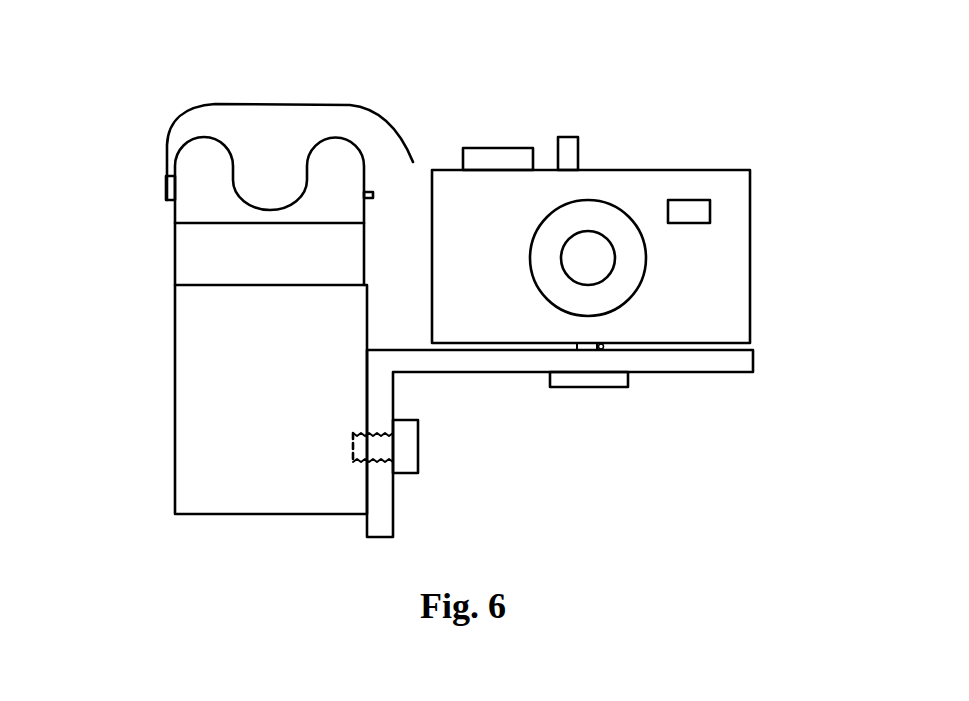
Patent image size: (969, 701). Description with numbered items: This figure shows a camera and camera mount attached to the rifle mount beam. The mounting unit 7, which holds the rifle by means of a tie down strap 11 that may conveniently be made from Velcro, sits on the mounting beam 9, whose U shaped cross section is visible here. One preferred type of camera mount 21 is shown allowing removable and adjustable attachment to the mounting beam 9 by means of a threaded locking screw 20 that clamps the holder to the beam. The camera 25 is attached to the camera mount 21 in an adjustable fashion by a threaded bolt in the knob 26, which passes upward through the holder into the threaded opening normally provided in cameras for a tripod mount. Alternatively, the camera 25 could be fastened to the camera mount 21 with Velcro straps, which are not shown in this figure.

The mounting unit 7 is at (183, 198).
The mounting beam 9 is at (209, 369).
The tie down strap 11 is at (215, 103).
The threaded locking screw 20 is at (422, 465).
The camera mount 21 is at (687, 360).
The camera 25 is at (720, 283).
The knob 26 is at (610, 388).